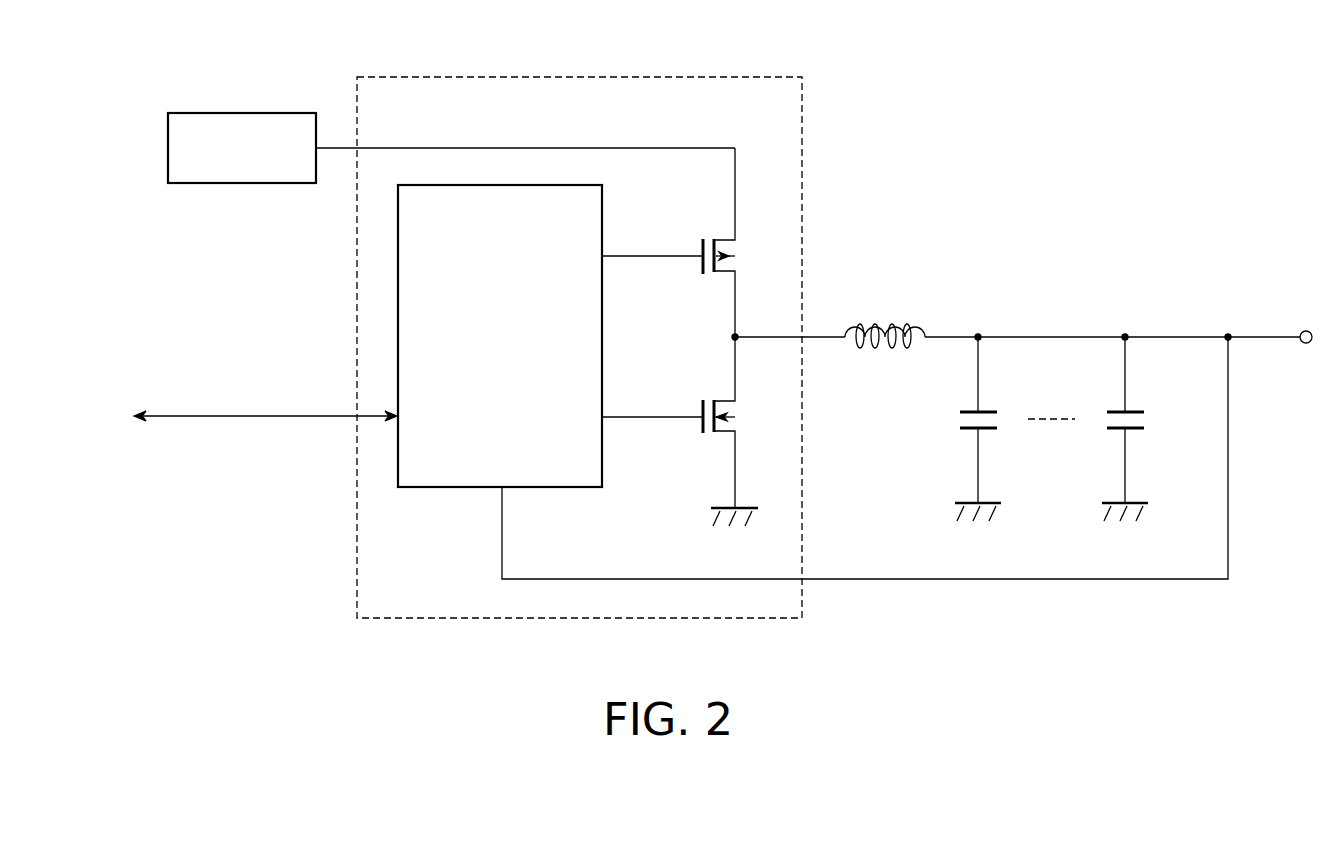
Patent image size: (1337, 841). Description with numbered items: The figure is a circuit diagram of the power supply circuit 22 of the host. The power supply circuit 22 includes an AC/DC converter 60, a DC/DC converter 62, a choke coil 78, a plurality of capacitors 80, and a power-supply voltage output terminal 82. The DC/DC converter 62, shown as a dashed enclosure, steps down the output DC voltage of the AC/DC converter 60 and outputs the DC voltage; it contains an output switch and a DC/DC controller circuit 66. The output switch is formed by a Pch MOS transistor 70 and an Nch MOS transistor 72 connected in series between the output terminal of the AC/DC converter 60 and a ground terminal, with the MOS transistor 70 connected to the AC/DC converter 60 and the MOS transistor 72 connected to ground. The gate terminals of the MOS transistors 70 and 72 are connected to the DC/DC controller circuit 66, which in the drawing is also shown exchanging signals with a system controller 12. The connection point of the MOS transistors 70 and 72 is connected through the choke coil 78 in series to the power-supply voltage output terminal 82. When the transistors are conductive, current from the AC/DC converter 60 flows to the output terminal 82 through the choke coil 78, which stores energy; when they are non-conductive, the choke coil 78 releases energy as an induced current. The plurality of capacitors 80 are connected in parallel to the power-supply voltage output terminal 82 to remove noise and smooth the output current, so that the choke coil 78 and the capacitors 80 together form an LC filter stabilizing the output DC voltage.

The power supply circuit 22 is at (974, 118).
The system controller 12 is at (264, 434).
The AC/DC converter 60 is at (274, 112).
The DC/DC converter 62 is at (806, 101).
The DC/DC controller circuit 66 is at (604, 206).
The Pch MOS transistor 70 is at (744, 259).
The Nch MOS transistor 72 is at (744, 419).
The choke coil 78 is at (897, 322).
The capacitors 80 is at (1053, 464).
The power-supply voltage output terminal 82 is at (1307, 330).